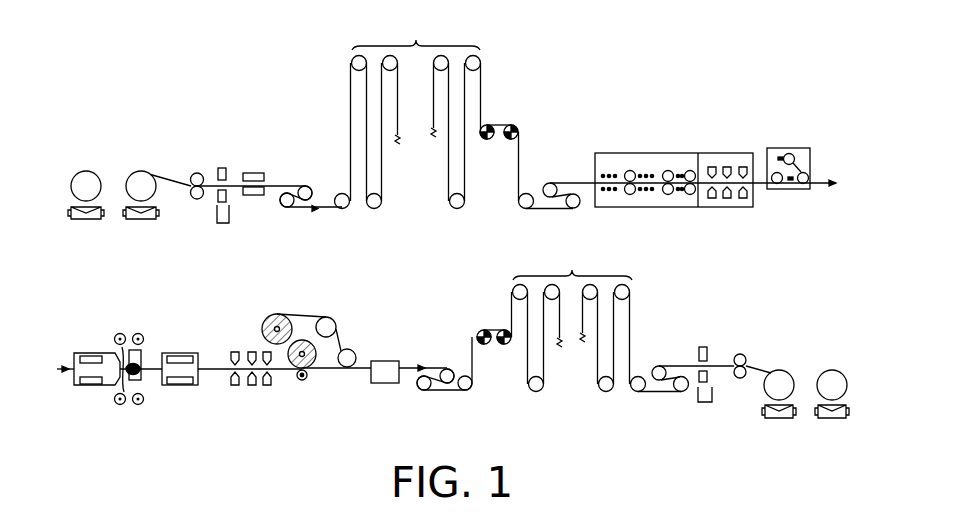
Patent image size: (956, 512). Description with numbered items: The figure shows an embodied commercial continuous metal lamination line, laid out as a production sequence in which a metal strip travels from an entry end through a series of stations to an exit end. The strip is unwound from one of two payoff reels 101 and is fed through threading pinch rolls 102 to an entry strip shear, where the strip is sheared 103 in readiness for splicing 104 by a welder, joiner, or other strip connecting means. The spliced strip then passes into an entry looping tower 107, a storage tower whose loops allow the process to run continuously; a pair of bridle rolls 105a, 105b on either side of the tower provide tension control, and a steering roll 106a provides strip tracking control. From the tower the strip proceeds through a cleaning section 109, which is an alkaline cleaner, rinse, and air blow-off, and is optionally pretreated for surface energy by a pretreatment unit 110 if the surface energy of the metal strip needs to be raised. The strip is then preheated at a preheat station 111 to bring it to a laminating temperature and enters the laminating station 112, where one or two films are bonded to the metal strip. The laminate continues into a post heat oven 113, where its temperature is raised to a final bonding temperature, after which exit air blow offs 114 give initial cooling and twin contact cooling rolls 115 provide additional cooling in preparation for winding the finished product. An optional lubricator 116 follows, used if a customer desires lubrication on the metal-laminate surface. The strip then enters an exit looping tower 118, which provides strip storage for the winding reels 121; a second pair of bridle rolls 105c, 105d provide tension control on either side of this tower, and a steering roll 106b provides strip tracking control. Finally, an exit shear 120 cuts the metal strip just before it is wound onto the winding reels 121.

The payoff reels 101 is at (132, 170).
The threading pinch rolls 102 is at (197, 170).
The entry strip shear 103 is at (222, 162).
The splicing means 104 is at (253, 168).
The bridle roll 105a is at (306, 187).
The bridle roll 105b is at (556, 172).
The bridle roll 105c is at (437, 360).
The bridle roll 105d is at (672, 355).
The steering roll 106a is at (506, 126).
The steering roll 106b is at (498, 326).
The entry looping tower 107 is at (454, 115).
The cleaning section 109 is at (663, 148).
The surface energy pretreatment 110 is at (787, 148).
The preheat station 111 is at (92, 350).
The laminating station 112 is at (128, 322).
The post heat oven 113 is at (180, 350).
The exit air blow offs 114 is at (250, 340).
The twin contact cooling rolls 115 is at (277, 313).
The lubricator 116 is at (386, 350).
The exit looping tower 118 is at (597, 321).
The exit shear 120 is at (705, 345).
The winding reels 121 is at (818, 370).